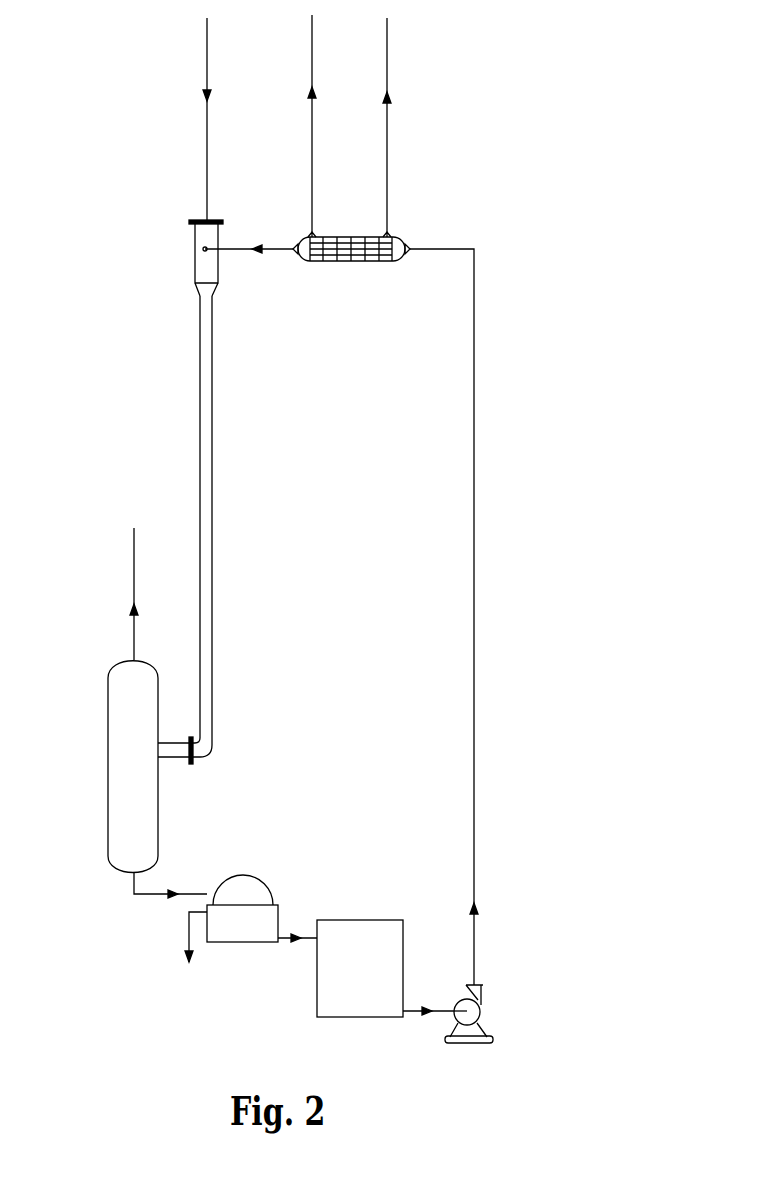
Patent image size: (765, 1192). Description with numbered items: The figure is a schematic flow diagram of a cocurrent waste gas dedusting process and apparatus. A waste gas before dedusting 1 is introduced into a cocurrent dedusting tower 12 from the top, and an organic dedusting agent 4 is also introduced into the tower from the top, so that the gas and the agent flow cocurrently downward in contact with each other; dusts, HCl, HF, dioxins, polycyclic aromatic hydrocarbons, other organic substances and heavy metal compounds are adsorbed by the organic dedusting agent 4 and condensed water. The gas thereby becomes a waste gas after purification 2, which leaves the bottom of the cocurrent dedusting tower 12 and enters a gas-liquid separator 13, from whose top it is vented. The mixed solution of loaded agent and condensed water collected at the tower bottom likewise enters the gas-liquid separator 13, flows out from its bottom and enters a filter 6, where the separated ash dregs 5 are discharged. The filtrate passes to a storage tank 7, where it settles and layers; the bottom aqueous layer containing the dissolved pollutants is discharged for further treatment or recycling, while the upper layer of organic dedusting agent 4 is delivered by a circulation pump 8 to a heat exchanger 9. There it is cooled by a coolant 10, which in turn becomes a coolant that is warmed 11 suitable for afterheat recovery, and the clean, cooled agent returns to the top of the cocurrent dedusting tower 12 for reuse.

The waste gas before dedusting 1 is at (203, 115).
The waste gas after purification 2 is at (124, 592).
The organic dedusting agent 4 is at (249, 230).
The ash dregs 5 is at (185, 941).
The filter 6 is at (248, 877).
The storage tank 7 is at (358, 922).
The circulation pump 8 is at (481, 985).
The heat exchanger 9 is at (398, 243).
The coolant 10 is at (297, 124).
The coolant that is warmed 11 is at (403, 122).
The cocurrent dedusting tower 12 is at (212, 545).
The gas-liquid separator 13 is at (108, 760).